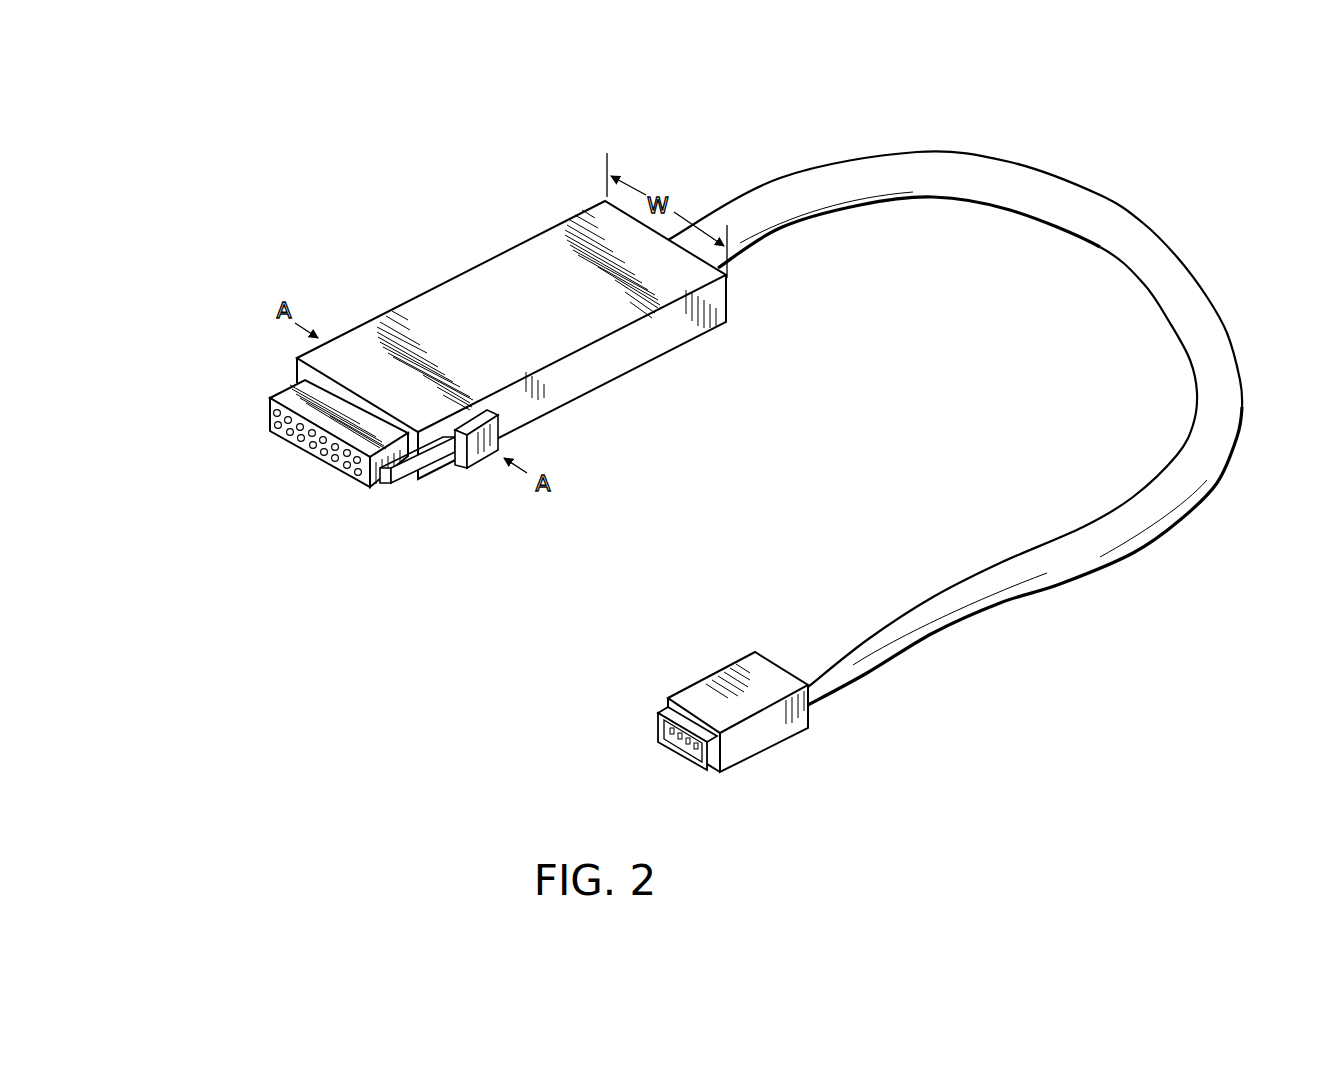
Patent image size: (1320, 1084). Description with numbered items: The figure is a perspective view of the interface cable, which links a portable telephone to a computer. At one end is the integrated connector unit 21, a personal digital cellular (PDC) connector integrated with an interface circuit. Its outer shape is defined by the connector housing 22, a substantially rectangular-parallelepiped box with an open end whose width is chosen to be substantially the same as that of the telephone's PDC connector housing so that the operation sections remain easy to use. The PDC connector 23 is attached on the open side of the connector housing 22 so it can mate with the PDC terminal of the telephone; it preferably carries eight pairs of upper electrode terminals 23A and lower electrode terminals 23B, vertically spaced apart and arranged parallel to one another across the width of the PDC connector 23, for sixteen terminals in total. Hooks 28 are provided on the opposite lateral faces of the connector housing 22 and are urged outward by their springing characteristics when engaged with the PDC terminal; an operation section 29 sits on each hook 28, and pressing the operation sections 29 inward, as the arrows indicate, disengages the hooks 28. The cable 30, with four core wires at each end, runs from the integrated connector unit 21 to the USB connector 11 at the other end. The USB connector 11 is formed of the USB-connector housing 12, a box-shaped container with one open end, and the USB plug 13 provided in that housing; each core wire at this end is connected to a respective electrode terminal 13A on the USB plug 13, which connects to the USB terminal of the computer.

The USB connector 11 is at (701, 697).
The USB-connector housing 12 is at (783, 730).
The USB plug 13 is at (651, 734).
The electrode terminal 13A is at (670, 732).
The integrated connector unit 21 is at (511, 329).
The connector housing 22 is at (542, 263).
The PDC connector 23 is at (295, 427).
The upper electrode terminals 23A is at (272, 410).
The lower electrode terminals 23B is at (292, 443).
The hooks 28 is at (400, 475).
The operation section 29 is at (487, 462).
The cable 30 is at (998, 168).